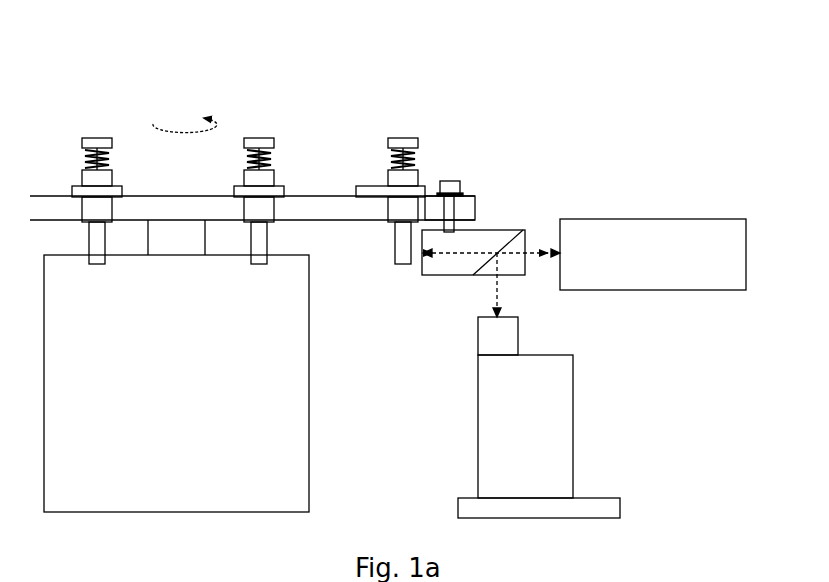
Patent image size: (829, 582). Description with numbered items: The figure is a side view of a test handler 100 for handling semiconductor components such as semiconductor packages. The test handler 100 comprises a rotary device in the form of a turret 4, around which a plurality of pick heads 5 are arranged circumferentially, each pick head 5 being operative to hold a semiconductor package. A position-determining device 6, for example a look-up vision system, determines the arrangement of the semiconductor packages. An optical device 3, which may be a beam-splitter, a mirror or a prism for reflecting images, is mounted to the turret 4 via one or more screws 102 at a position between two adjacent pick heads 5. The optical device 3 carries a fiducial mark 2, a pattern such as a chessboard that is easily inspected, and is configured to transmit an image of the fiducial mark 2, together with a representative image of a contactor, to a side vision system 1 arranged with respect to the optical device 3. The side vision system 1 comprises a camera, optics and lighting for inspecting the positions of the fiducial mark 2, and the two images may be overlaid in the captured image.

The test handler 100 is at (600, 88).
The side vision system 1 is at (609, 262).
The fiducial mark 2 is at (426, 252).
The optical device 3 is at (427, 277).
The turret 4 is at (313, 196).
The pick heads 5 is at (90, 141).
The position-determining device 6 is at (528, 431).
The screws 102 is at (452, 181).